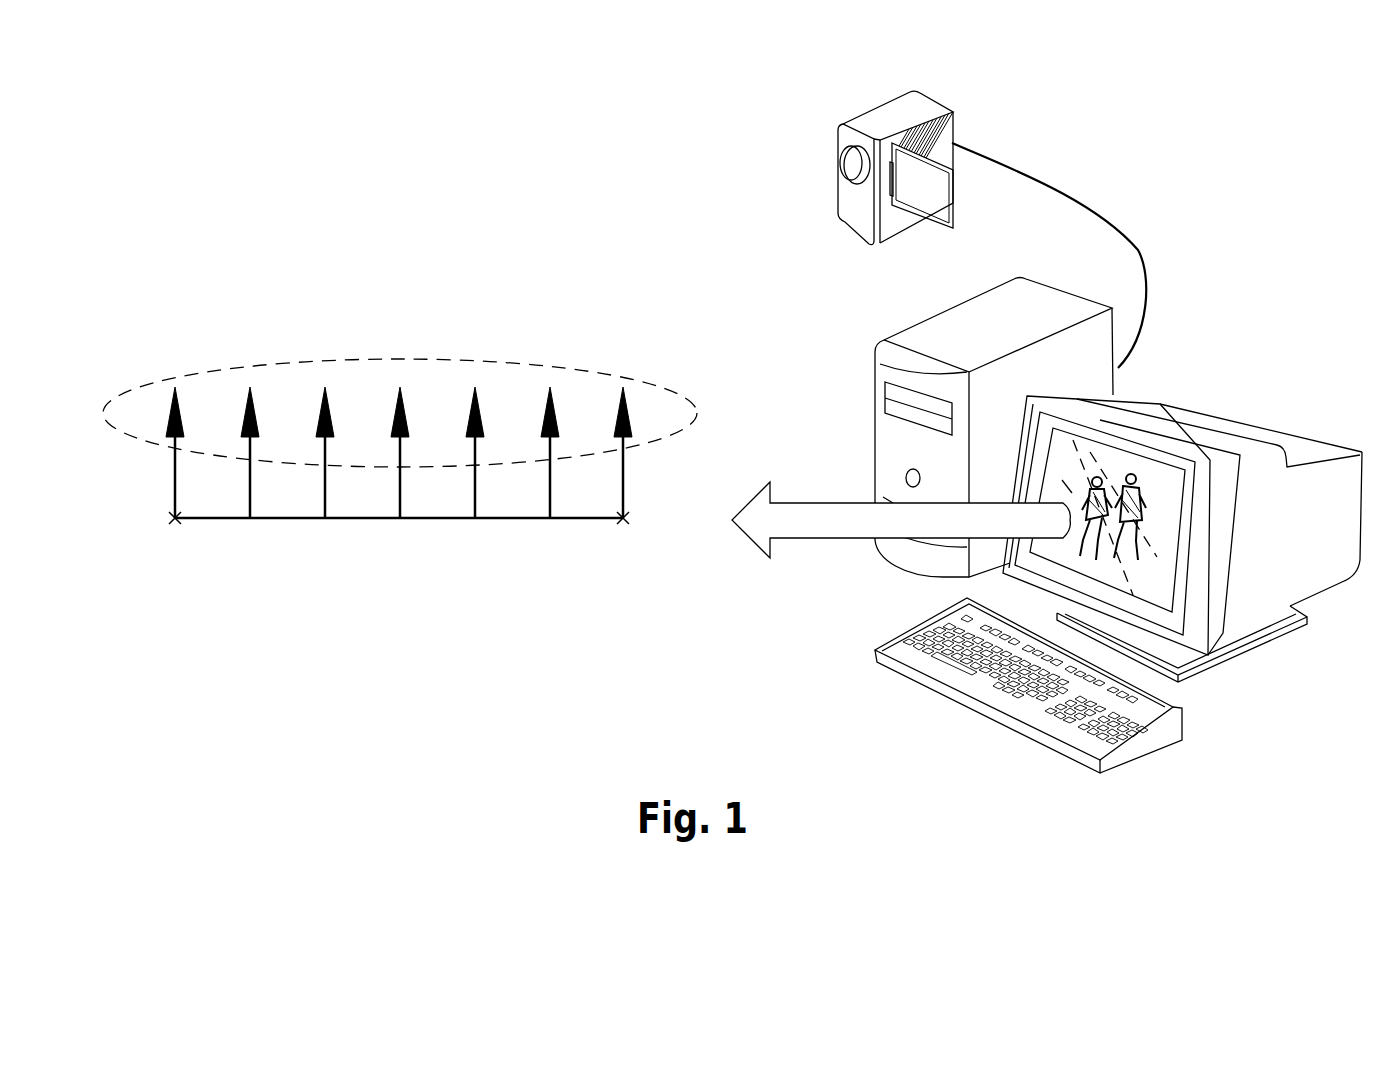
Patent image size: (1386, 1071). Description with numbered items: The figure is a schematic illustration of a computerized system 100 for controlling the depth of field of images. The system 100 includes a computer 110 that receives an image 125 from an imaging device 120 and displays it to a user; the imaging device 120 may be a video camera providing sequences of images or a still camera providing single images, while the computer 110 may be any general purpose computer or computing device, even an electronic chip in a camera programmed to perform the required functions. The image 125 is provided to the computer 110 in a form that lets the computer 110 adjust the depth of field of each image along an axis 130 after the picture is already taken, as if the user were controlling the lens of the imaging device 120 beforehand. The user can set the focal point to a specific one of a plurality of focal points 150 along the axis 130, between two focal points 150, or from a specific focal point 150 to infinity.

The computerized system 100 is at (1222, 177).
The computer 110 is at (873, 392).
The imaging device 120 is at (944, 97).
The image 125 is at (1150, 490).
The axis 130 is at (378, 520).
The focal points 150 is at (421, 360).